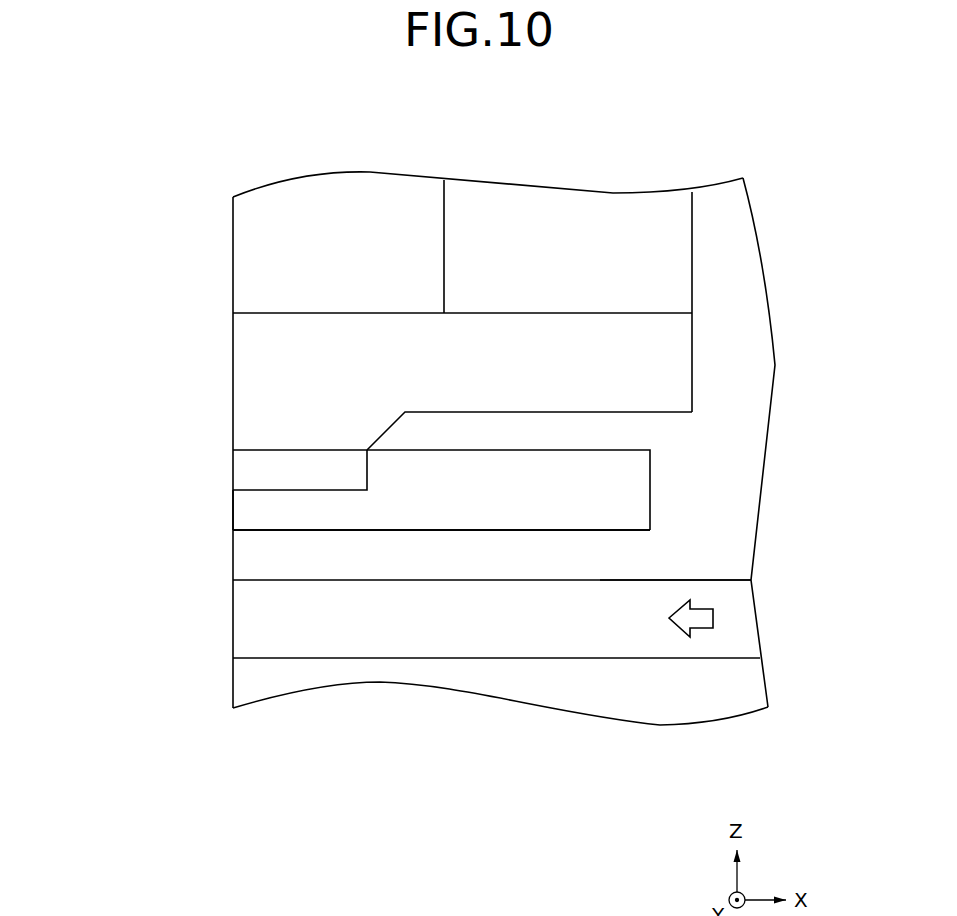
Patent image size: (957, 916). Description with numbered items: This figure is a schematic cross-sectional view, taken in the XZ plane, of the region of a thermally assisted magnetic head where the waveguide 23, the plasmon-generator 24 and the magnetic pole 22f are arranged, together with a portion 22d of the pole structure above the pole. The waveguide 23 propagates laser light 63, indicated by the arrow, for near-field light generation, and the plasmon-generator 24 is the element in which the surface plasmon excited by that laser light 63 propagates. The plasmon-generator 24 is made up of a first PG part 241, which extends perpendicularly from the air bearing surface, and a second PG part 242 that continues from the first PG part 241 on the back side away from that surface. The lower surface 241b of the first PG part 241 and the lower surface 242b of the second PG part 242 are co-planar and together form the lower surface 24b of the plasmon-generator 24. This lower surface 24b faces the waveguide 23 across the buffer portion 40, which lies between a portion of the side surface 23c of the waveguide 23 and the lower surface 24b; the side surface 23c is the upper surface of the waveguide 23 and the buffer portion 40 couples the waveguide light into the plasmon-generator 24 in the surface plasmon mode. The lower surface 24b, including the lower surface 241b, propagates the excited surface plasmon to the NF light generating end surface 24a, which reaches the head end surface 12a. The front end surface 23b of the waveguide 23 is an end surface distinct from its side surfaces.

The head end surface 12a is at (228, 260).
The portion of substrate 22d is at (568, 213).
The magnetic pole 22f is at (250, 368).
The plasmon-generator 24 is at (366, 494).
The second PG part 242 is at (393, 471).
The first PG part 241 is at (253, 509).
The NF light generating end surface 24a is at (230, 526).
The buffer portion 40 is at (258, 557).
The side surface 23c is at (714, 576).
The front end surface 23b is at (232, 633).
The waveguide 23 is at (365, 640).
The lower surface of first PG part 241b is at (337, 536).
The lower surface of second PG part 242b is at (543, 536).
The lower surface of plasmon-generator 24b is at (580, 782).
The laser light 63 is at (697, 630).